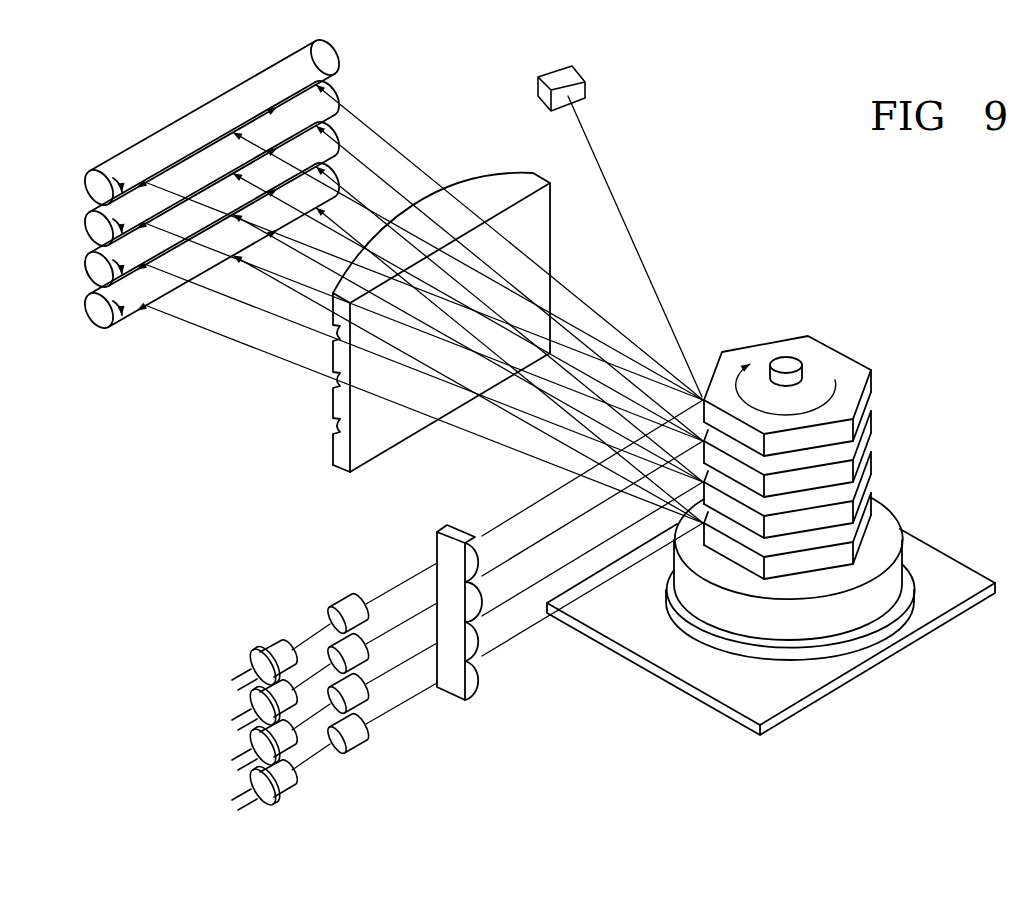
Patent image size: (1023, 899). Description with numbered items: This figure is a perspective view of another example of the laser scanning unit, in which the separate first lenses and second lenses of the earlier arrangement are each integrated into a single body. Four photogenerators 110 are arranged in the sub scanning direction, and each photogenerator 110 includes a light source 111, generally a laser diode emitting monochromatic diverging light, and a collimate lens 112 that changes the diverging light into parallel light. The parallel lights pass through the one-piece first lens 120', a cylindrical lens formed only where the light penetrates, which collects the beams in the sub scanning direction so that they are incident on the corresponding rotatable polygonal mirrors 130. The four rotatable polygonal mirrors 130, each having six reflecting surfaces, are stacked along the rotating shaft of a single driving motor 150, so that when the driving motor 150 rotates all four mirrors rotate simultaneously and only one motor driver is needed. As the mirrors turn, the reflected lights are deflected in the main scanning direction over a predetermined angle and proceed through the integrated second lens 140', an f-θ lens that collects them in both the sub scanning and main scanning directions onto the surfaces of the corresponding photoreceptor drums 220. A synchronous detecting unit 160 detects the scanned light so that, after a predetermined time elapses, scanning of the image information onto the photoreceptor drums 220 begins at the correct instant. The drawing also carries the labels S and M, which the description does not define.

The photogenerator 110 is at (337, 531).
The light source 111 is at (263, 648).
The collimate lens 112 is at (348, 607).
The first lens 120' is at (529, 624).
The rotatable polygonal mirror 130 is at (832, 350).
The second lens 140' is at (441, 293).
The driving motor 150 is at (898, 561).
The synchronous detecting unit 160 is at (579, 90).
The photoreceptor drum 220 is at (186, 120).
The scanning start point S is at (108, 167).
The scanning line M is at (249, 112).